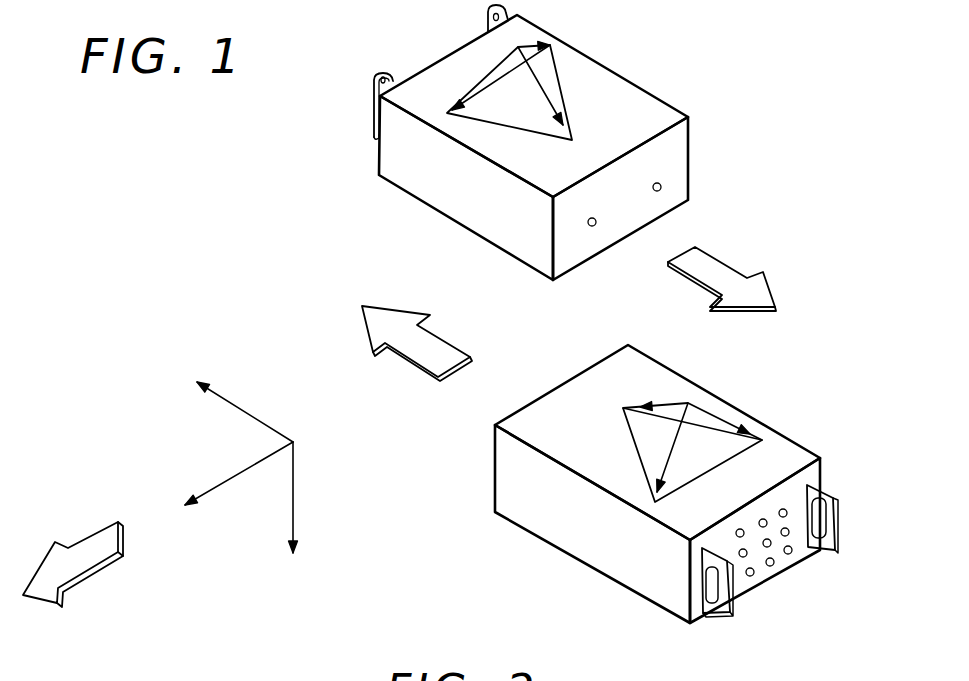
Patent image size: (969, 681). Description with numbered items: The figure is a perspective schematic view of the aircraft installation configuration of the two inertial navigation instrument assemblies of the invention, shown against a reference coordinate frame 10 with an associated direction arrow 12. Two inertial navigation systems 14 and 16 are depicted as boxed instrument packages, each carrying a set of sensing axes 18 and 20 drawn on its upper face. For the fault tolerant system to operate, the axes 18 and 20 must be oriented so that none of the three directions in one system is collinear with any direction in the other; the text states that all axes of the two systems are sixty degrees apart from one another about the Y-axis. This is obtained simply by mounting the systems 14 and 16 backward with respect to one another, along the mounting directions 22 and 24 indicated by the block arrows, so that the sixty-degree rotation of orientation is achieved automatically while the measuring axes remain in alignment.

The coordinate axes X Y Z 10 is at (284, 429).
The Z-direction impact arrow 12 is at (78, 551).
The inertial navigation system 14 is at (442, 178).
The inertial navigation system 16 is at (572, 532).
The axes 18 is at (548, 85).
The axes 20 is at (720, 420).
The mounting direction 22 is at (376, 320).
The mounting direction 24 is at (723, 278).